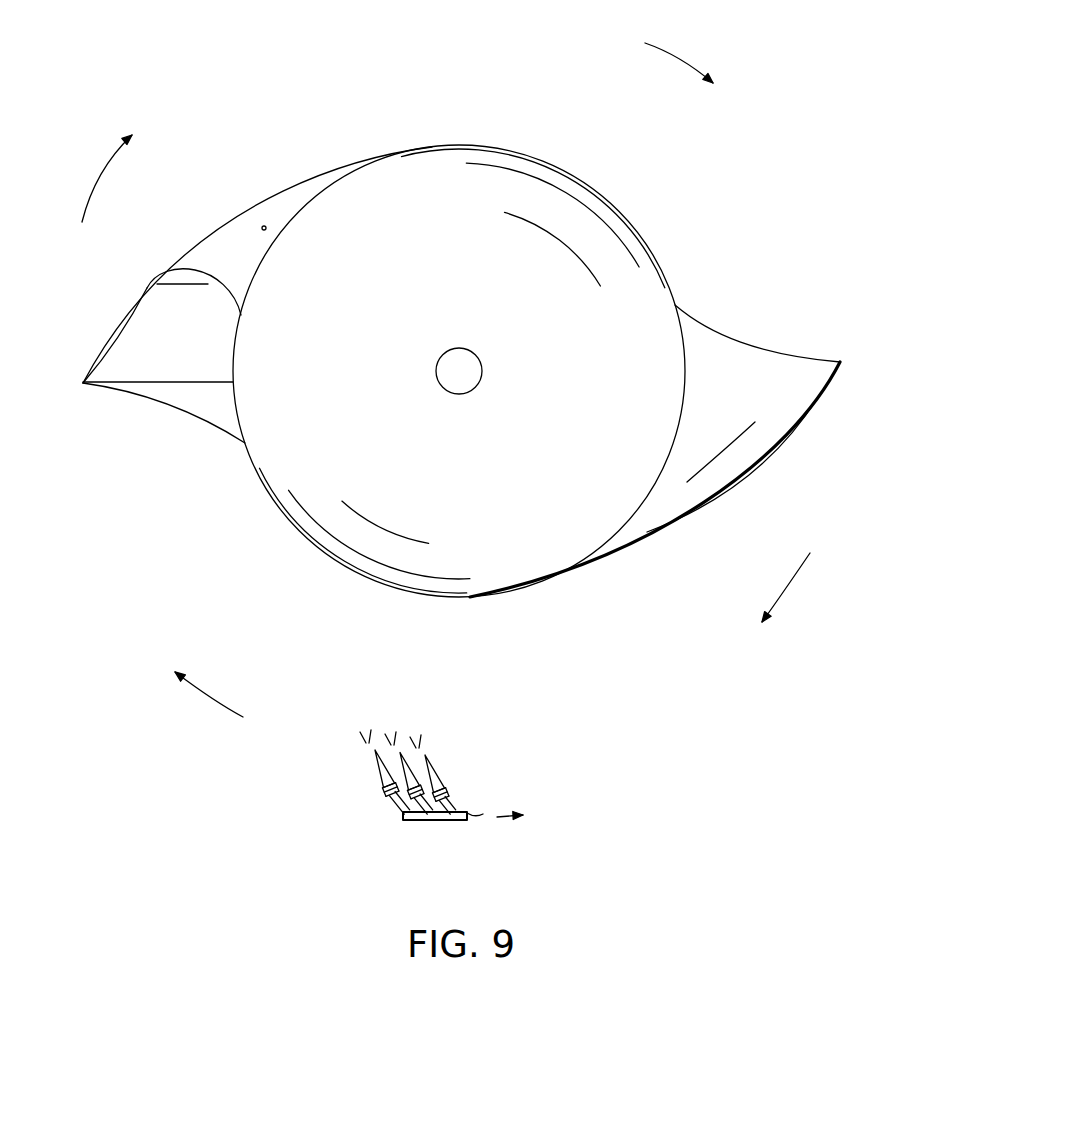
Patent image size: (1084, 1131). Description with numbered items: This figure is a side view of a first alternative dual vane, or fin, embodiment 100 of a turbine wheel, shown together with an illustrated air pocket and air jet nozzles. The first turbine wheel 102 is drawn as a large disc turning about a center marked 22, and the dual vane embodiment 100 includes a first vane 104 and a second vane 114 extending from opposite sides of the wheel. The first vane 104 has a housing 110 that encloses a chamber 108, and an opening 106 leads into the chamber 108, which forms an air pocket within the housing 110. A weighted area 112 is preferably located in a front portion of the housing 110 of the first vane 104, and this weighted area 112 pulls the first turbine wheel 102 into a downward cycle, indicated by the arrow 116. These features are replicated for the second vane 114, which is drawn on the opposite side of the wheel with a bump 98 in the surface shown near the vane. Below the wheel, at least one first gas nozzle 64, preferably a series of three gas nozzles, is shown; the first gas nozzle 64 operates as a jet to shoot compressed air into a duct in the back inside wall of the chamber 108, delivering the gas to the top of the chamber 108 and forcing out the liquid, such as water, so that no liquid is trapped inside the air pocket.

The axis of rotation 22 is at (473, 382).
The first gas nozzle 64 is at (368, 788).
The projection 98 is at (185, 278).
The dual vane embodiment 100 is at (544, 156).
The first turbine wheel 102 is at (522, 311).
The first vane 104 is at (253, 270).
The opening 106 is at (163, 386).
The chamber 108 is at (188, 356).
The housing 110 is at (110, 330).
The weighted area 112 is at (263, 225).
The second vane 114 is at (752, 417).
The downward cycle 116 is at (680, 60).